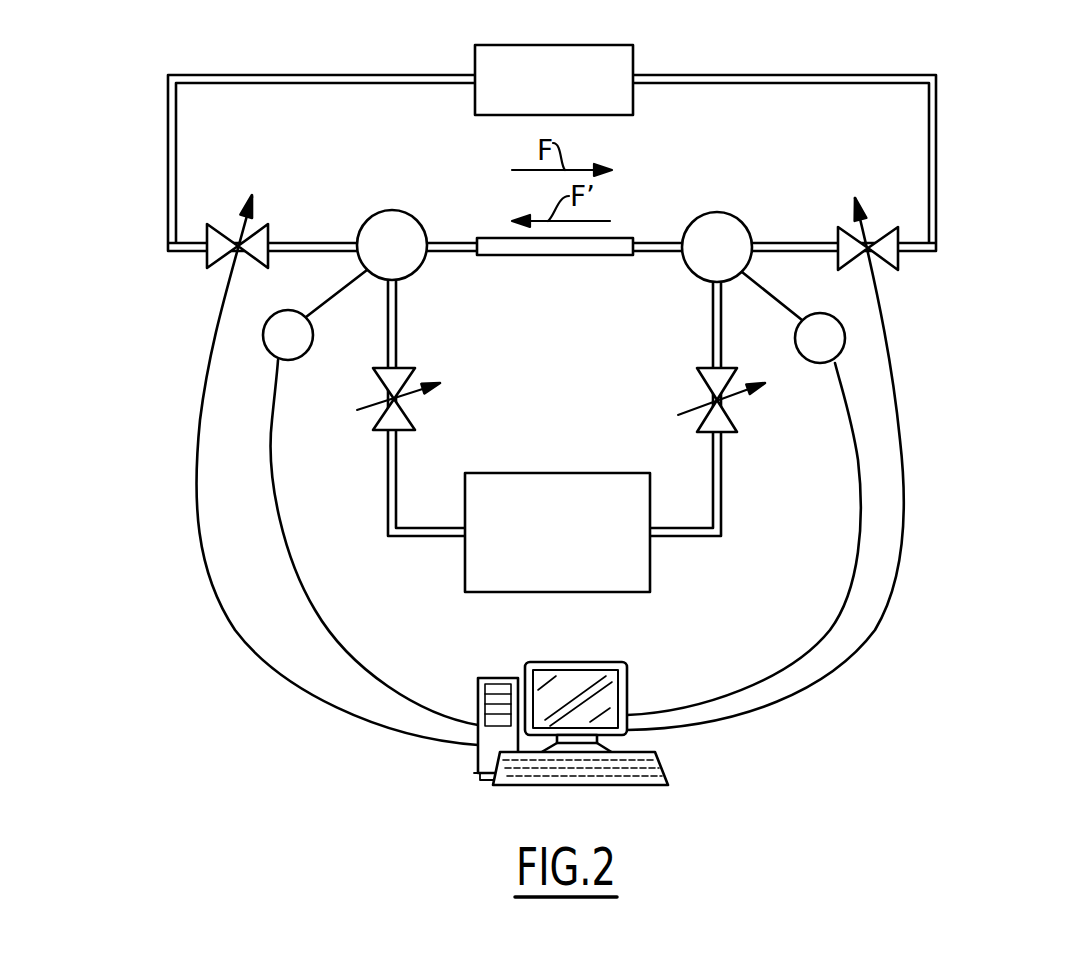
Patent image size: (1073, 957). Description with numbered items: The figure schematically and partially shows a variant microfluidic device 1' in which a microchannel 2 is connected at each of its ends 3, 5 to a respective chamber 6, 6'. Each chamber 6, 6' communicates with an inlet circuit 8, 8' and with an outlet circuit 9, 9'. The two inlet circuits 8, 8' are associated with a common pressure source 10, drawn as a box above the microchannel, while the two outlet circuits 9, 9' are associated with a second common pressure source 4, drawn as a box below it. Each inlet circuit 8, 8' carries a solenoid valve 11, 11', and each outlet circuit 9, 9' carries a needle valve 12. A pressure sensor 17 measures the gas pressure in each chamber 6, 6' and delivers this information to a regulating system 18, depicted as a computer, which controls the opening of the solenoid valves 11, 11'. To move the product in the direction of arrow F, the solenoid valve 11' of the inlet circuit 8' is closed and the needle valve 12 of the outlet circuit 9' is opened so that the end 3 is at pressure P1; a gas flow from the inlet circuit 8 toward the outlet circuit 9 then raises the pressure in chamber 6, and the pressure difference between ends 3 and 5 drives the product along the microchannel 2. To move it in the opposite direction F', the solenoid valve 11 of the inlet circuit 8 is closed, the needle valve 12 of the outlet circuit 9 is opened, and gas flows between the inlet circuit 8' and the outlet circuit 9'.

The microfluidic device 1' is at (835, 532).
The microchannel 2 is at (565, 256).
The end 3 is at (633, 256).
The pressure source 4 is at (547, 551).
The other end 5 is at (477, 256).
The chamber 6 is at (393, 212).
The chamber 6' is at (730, 212).
The inlet circuit 8 is at (321, 163).
The inlet circuit 8' is at (784, 163).
The outlet circuit 9 is at (487, 408).
The outlet circuit 9' is at (732, 434).
The pressure source 10 is at (537, 104).
The solenoid valve 11 is at (206, 280).
The solenoid valve 11' is at (906, 280).
The needle valve 12 is at (408, 410).
The pressure sensor 17 is at (296, 360).
The regulating system 18 is at (630, 676).